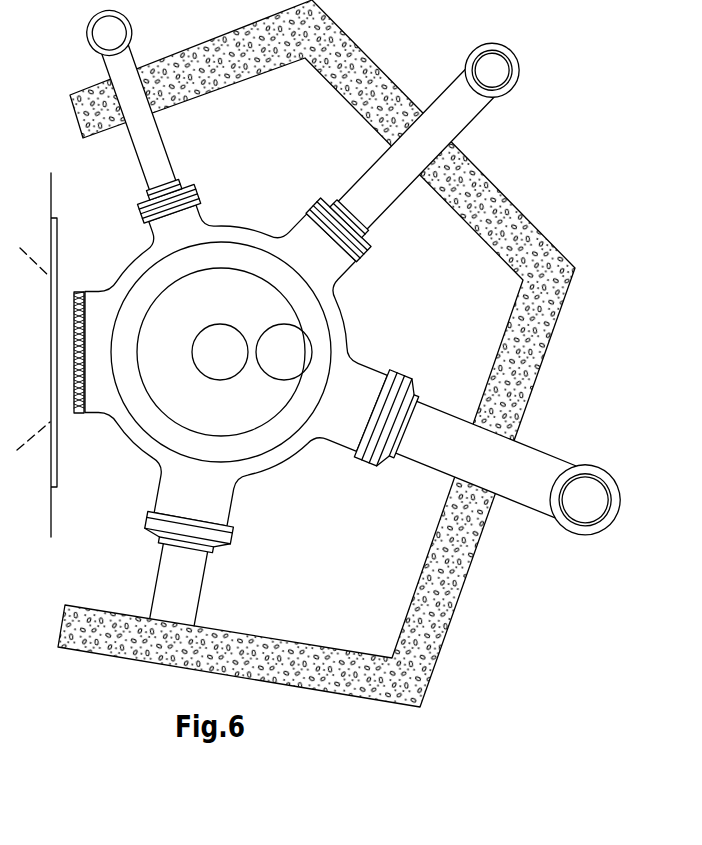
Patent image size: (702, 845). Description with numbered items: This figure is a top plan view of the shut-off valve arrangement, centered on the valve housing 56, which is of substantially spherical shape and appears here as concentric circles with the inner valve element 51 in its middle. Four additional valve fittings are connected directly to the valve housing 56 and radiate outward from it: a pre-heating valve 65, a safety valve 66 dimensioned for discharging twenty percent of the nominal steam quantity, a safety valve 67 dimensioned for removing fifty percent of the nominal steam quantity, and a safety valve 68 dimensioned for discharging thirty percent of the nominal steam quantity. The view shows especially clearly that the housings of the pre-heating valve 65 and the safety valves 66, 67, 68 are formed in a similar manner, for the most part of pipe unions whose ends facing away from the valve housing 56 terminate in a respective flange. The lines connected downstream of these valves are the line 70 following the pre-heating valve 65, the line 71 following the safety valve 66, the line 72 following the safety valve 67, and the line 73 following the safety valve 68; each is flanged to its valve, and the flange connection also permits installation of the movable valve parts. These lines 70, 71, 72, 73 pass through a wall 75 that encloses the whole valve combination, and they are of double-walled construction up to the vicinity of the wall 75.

The valve insert / cartridge 51 is at (237, 419).
The valve housing 56 is at (130, 427).
The pre-heating valve 65 is at (190, 218).
The safety valve 66 is at (325, 262).
The safety valve 67 is at (345, 417).
The safety valve 68 is at (210, 498).
The line 70 is at (168, 152).
The line 71 is at (385, 205).
The line 72 is at (438, 413).
The line 73 is at (163, 582).
The wall 75 is at (520, 215).